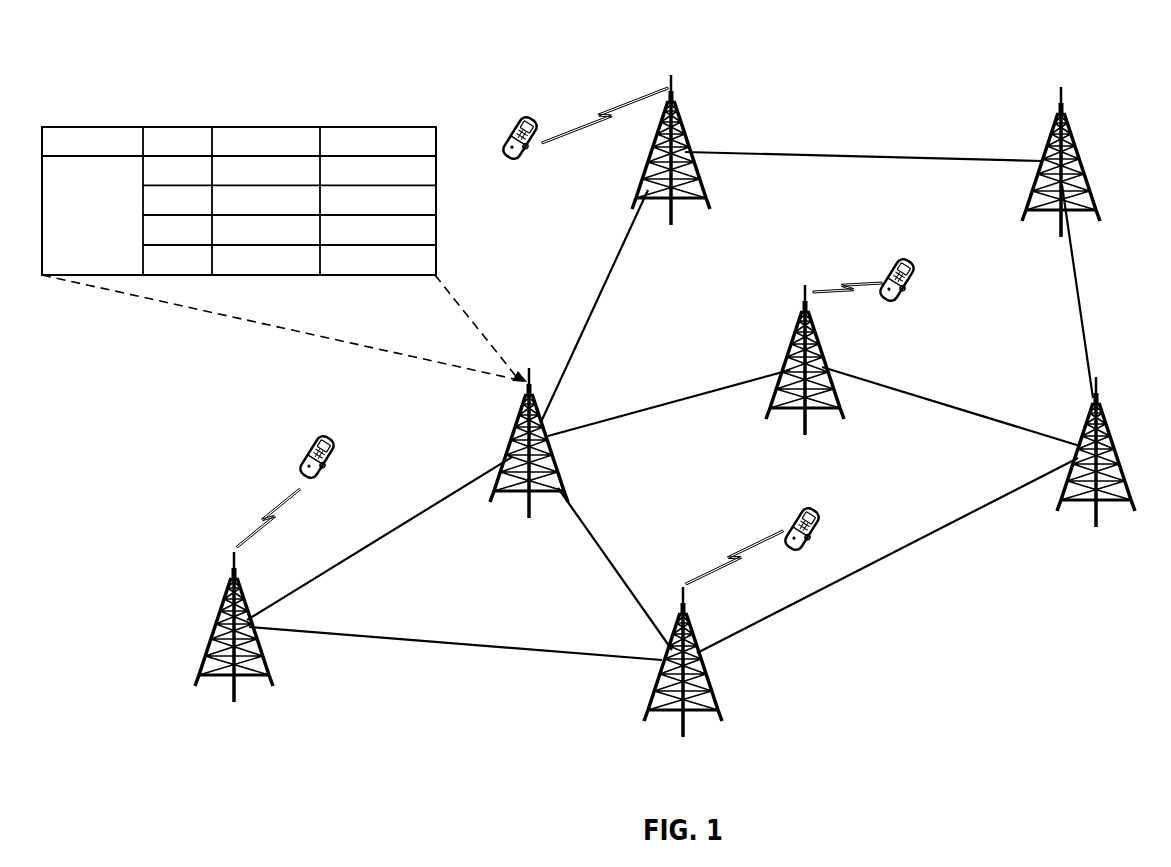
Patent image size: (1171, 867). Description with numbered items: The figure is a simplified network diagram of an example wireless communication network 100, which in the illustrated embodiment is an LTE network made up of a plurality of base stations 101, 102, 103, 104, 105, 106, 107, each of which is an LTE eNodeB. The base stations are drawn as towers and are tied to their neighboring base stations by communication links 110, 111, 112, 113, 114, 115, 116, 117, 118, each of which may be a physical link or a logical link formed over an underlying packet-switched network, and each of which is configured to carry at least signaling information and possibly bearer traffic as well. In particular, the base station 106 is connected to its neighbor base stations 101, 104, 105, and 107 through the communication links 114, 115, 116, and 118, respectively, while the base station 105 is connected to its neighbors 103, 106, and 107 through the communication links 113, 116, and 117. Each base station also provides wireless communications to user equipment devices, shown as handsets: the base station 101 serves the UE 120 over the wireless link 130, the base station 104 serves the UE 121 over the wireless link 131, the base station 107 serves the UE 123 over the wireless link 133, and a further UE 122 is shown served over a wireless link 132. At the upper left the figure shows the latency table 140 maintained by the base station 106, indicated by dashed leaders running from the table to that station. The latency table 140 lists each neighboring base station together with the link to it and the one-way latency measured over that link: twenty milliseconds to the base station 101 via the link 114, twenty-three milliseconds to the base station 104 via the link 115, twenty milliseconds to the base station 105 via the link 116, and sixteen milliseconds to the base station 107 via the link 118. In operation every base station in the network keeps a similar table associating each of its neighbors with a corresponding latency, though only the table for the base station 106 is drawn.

The wireless communication network 100 is at (420, 70).
The base station 101 is at (679, 119).
The base station 102 is at (1068, 138).
The base station 103 is at (1112, 447).
The base station 104 is at (800, 311).
The base station 105 is at (709, 688).
The base station 106 is at (518, 424).
The base station 107 is at (222, 633).
The communication link 110 is at (868, 157).
The communication link 111 is at (1083, 300).
The communication link 112 is at (948, 403).
The communication link 113 is at (905, 548).
The communication link 114 is at (614, 278).
The communication link 115 is at (705, 391).
The communication link 116 is at (606, 542).
The communication link 117 is at (470, 646).
The communication link 118 is at (410, 523).
The UE 120 is at (531, 113).
The UE 121 is at (909, 256).
The UE 122 is at (817, 500).
The UE 123 is at (330, 427).
The wireless link 130 is at (609, 104).
The wireless link 131 is at (828, 286).
The wireless link 132 is at (722, 557).
The wireless link 133 is at (258, 523).
The latency table 140 is at (261, 125).